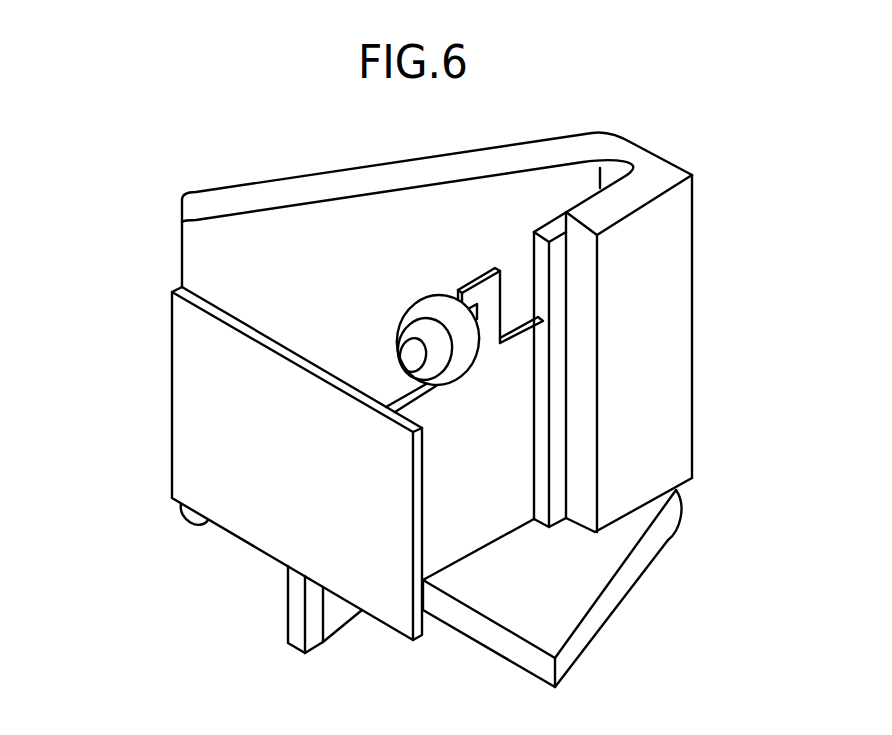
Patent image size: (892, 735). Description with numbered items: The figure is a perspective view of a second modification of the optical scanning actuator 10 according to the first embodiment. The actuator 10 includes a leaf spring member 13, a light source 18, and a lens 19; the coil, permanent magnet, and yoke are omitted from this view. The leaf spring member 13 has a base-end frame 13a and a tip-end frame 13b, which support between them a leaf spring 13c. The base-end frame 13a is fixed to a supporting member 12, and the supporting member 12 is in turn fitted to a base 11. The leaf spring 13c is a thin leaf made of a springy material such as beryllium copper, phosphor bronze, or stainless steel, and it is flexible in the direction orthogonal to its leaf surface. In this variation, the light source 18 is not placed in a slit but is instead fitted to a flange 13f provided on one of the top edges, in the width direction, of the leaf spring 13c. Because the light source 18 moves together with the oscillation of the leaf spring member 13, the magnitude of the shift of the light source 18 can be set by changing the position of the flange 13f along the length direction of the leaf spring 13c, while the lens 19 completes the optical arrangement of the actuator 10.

The optical scanning actuator 10 is at (136, 184).
The base 11 is at (595, 559).
The supporting member 12 is at (240, 200).
The leaf spring member 13 is at (478, 275).
The base-end frame 13a is at (557, 328).
The tip-end frame 13b is at (300, 620).
The leaf spring 13c is at (473, 458).
The flange 13f is at (485, 293).
The light source 18 is at (463, 360).
The lens 19 is at (210, 433).